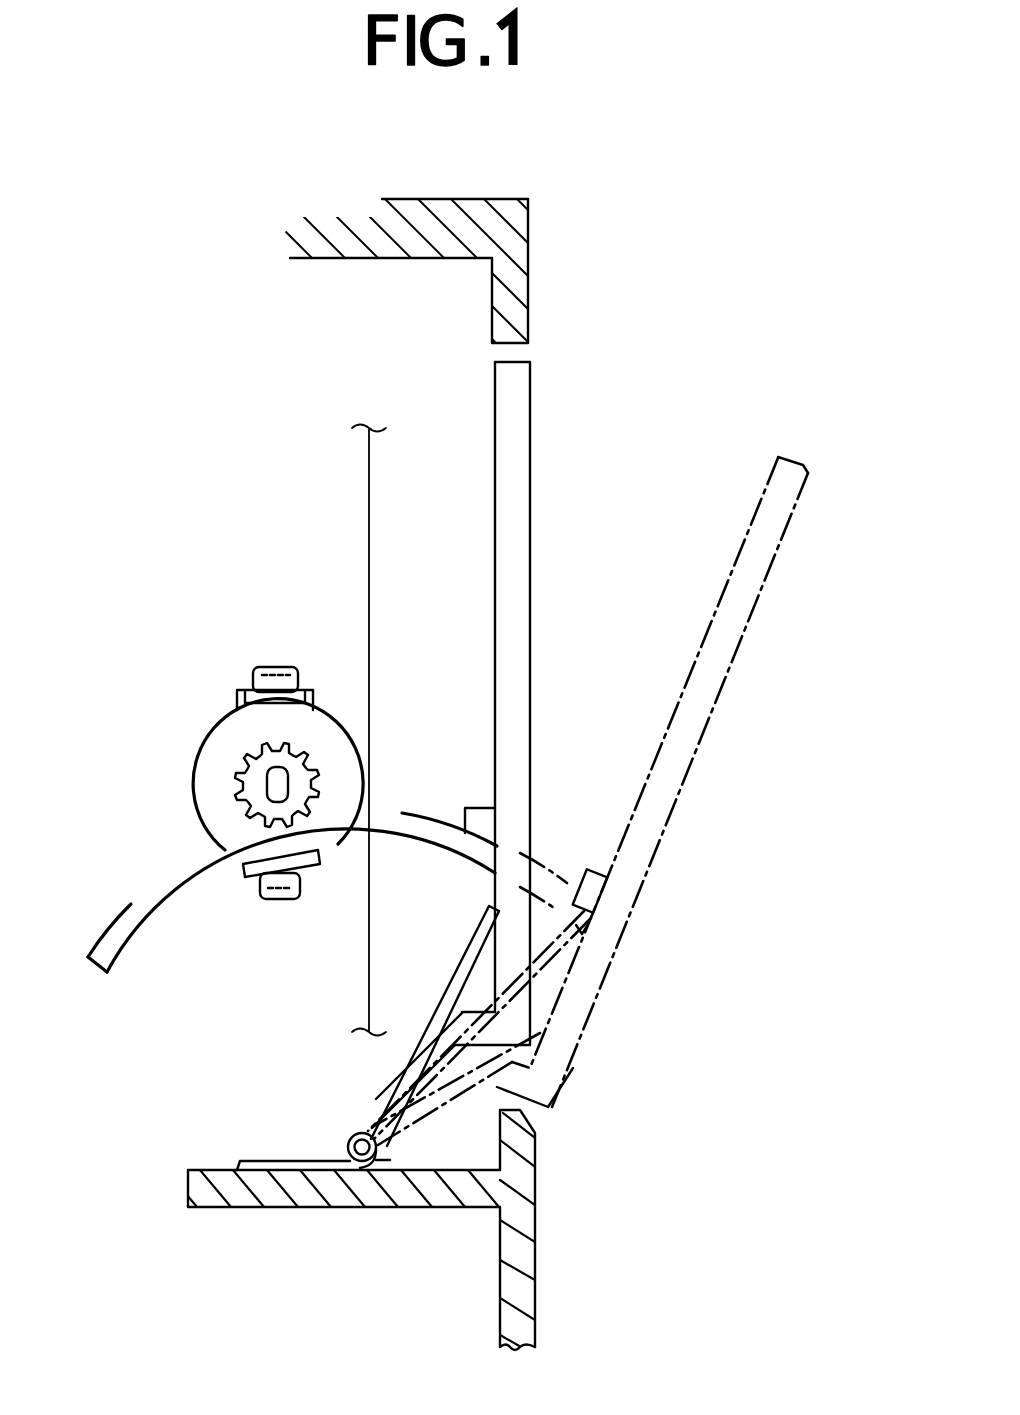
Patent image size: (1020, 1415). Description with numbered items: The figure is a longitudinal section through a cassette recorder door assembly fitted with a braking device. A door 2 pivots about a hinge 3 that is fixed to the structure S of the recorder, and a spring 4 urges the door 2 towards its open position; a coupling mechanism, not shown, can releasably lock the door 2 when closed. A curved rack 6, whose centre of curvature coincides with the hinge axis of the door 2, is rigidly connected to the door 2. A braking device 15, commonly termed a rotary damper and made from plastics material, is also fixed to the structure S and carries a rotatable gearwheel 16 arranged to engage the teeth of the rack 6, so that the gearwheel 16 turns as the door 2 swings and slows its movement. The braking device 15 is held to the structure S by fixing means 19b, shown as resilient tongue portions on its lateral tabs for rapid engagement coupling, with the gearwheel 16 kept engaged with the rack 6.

The door 2 is at (748, 532).
The hinge 3 is at (350, 1142).
The spring 4 is at (473, 968).
The curved rack 6 is at (130, 904).
The braking device 15 is at (196, 716).
The rotatable gearwheel 16 is at (240, 773).
The fixing means 19b is at (272, 666).
The structure S is at (312, 568).